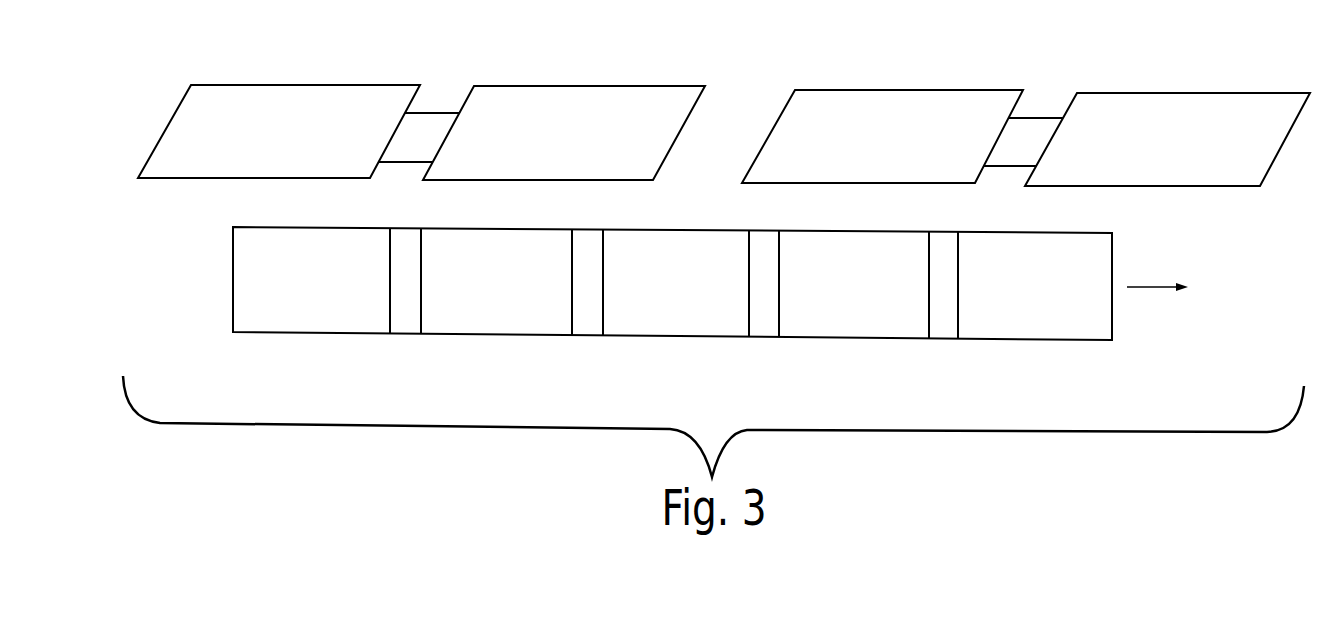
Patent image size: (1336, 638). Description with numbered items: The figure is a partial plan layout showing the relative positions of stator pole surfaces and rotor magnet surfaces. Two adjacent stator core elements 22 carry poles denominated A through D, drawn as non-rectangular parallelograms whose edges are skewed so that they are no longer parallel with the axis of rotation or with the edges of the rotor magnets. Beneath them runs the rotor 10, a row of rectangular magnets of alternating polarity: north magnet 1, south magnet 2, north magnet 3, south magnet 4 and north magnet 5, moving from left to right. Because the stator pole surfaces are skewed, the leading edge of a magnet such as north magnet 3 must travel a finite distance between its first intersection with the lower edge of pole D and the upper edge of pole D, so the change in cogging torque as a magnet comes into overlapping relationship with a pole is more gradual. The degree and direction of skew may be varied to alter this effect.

The stator core element 22 is at (925, 84).
The magnet array 10 is at (672, 319).
The north magnet 1 is at (344, 280).
The south magnet 2 is at (496, 281).
The north magnet 3 is at (676, 283).
The south magnet 4 is at (854, 285).
The north magnet 5 is at (1035, 286).